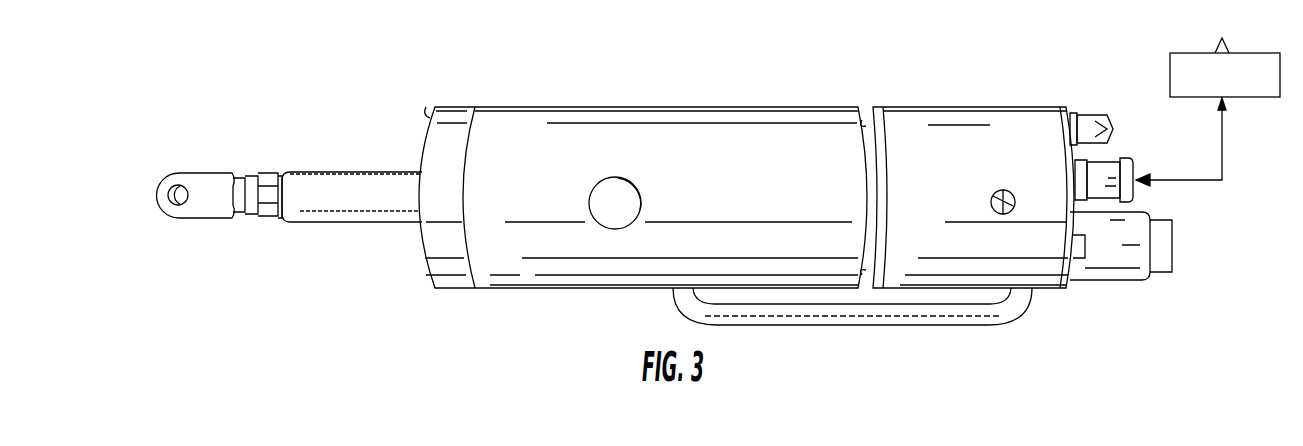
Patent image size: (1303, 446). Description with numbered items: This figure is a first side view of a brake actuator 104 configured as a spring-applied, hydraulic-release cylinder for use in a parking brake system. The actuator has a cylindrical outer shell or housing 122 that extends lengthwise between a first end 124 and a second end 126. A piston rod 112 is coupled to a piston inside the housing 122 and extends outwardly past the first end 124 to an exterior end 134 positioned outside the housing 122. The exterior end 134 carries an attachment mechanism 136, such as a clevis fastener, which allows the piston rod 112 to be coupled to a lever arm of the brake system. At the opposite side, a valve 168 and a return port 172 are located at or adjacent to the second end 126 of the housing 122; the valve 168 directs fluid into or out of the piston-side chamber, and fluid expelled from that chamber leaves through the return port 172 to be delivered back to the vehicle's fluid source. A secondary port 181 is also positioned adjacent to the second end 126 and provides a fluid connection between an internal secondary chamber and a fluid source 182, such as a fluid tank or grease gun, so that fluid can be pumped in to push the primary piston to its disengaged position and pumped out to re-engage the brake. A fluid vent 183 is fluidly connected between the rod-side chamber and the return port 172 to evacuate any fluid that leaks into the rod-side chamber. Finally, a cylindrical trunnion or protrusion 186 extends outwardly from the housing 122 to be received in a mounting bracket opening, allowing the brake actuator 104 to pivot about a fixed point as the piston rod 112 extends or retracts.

The brake actuator 104 is at (374, 84).
The piston rod 112 is at (342, 192).
The housing 122 is at (615, 120).
The first end 124 is at (425, 112).
The second end 126 is at (1072, 110).
The exterior end 134 is at (155, 196).
The attachment mechanism 136 is at (200, 186).
The valve 168 is at (1105, 270).
The return port 172 is at (1100, 124).
The secondary port 181 is at (1105, 170).
The fluid source 182 is at (1208, 112).
The fluid vent 183 is at (847, 316).
The protrusion 186 is at (608, 213).